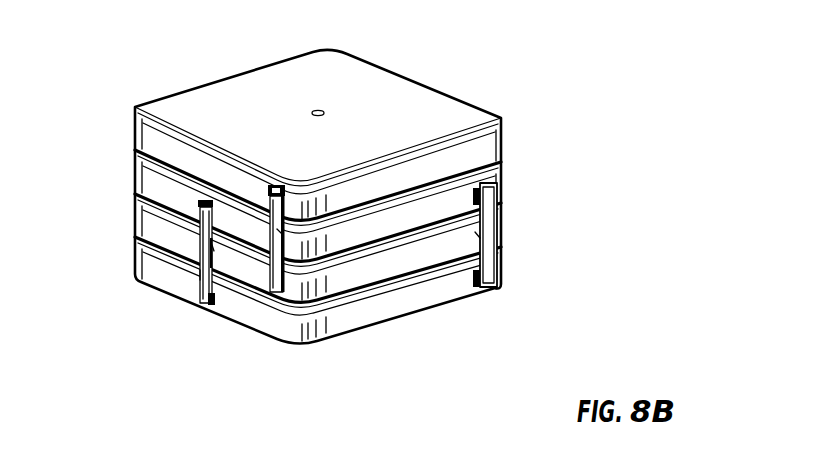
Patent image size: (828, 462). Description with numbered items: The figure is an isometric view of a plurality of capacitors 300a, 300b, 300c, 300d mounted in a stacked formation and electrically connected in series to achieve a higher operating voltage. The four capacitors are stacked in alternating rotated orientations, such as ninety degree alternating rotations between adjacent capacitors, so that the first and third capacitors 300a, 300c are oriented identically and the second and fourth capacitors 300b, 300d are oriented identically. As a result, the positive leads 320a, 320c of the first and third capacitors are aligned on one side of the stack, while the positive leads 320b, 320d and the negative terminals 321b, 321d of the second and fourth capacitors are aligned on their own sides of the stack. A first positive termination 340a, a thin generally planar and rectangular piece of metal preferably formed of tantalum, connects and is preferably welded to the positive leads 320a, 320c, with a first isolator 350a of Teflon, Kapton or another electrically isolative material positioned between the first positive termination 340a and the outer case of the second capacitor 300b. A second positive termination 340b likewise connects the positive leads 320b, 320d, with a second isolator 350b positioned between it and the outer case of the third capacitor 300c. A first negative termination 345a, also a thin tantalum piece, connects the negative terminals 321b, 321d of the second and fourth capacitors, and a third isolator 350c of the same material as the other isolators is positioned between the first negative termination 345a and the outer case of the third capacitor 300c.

The first capacitor 300a is at (502, 147).
The second capacitor 300b is at (502, 190).
The third capacitor 300c is at (502, 230).
The fourth capacitor 300d is at (502, 273).
The positive lead 320a is at (289, 195).
The positive lead 320b is at (472, 196).
The positive lead 320c is at (288, 285).
The positive lead 320d is at (478, 288).
The first positive termination 340a is at (272, 187).
The second positive termination 340b is at (487, 287).
The negative terminal 321b is at (204, 199).
The negative terminal 321d is at (217, 303).
The first negative termination 345a is at (200, 273).
The first isolator 350a is at (278, 232).
The second isolator 350b is at (477, 235).
The third isolator 350c is at (213, 248).